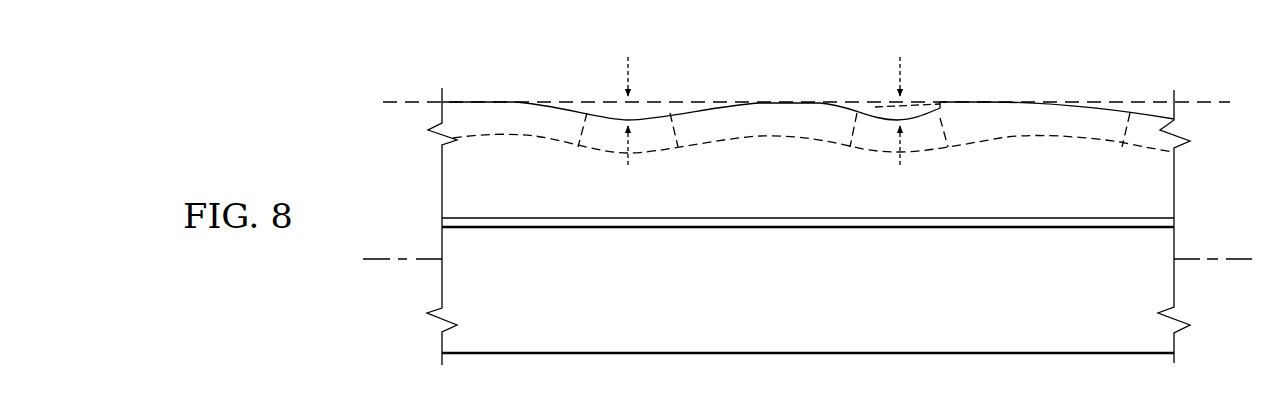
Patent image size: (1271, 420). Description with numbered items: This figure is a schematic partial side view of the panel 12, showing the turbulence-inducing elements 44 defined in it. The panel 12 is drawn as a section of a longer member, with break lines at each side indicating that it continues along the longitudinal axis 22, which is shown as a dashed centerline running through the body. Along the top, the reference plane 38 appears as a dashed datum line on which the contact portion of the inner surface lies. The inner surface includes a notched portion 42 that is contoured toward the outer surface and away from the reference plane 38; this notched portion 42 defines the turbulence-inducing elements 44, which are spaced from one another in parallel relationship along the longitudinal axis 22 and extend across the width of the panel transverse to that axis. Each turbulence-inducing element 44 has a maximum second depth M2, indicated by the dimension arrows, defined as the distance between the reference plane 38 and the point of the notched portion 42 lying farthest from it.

The panel 12 is at (499, 76).
The longitudinal axis 22 is at (379, 257).
The reference plane 38 is at (1201, 99).
The notched portion 42 is at (763, 81).
The turbulence-inducing element 44 is at (603, 99).
The maximum second depth M2 is at (764, 98).